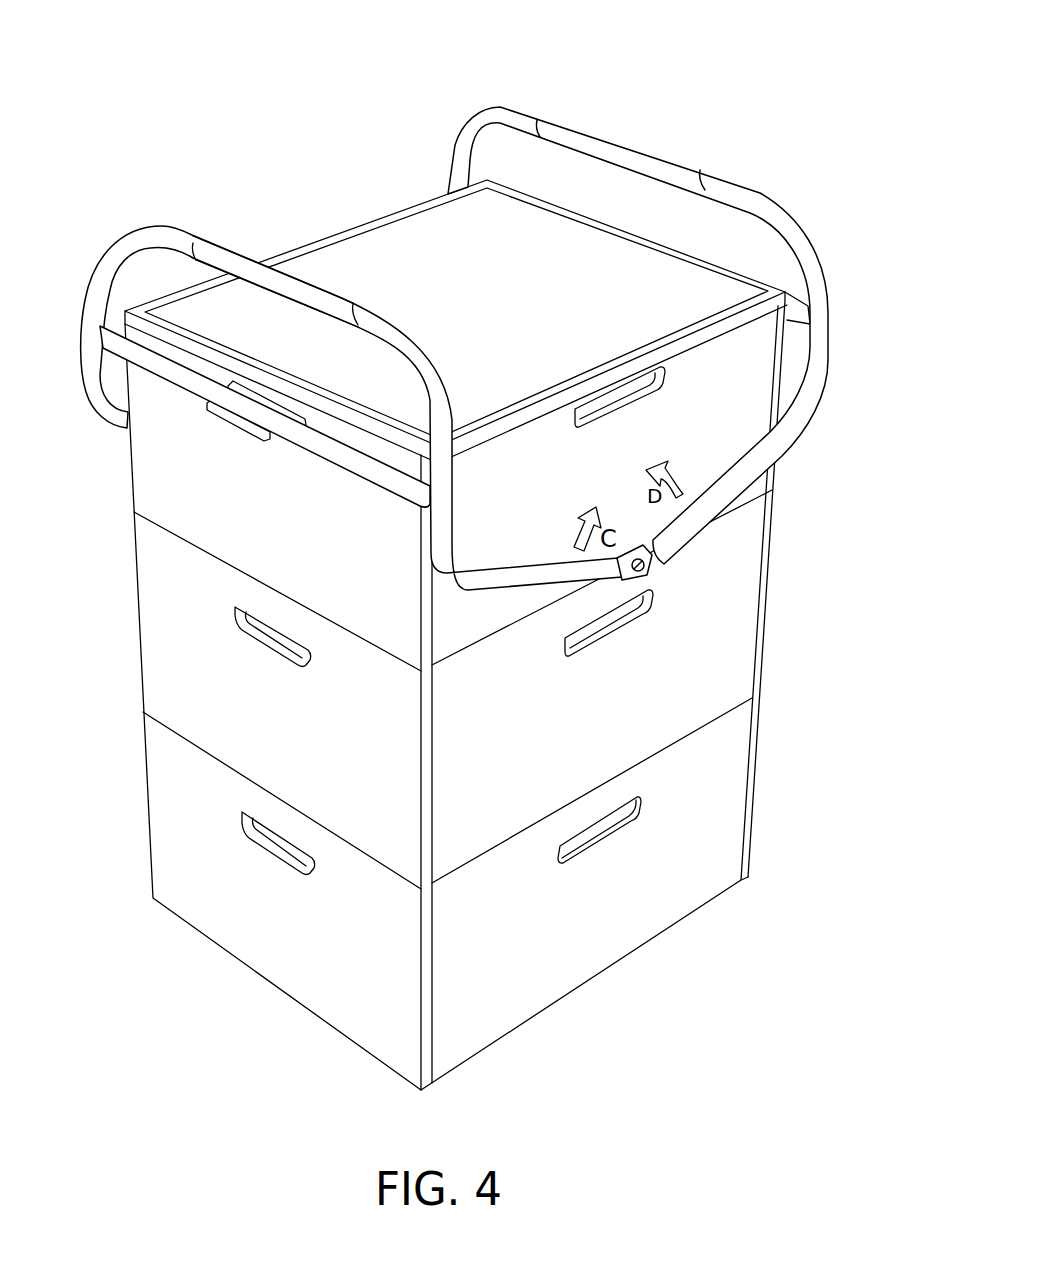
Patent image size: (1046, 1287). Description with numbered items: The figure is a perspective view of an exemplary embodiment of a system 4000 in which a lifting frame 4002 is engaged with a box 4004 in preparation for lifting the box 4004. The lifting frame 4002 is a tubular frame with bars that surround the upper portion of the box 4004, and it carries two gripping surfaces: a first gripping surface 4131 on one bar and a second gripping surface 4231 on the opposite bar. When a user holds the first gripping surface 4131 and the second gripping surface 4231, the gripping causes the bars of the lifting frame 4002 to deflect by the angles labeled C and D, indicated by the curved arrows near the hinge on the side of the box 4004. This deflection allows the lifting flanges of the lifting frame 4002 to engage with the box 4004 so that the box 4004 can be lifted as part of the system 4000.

The system 4000 is at (272, 85).
The lifting frame 4002 is at (124, 247).
The box 4004 is at (547, 283).
The first gripping surface 4131 is at (625, 147).
The second gripping surface 4231 is at (315, 286).